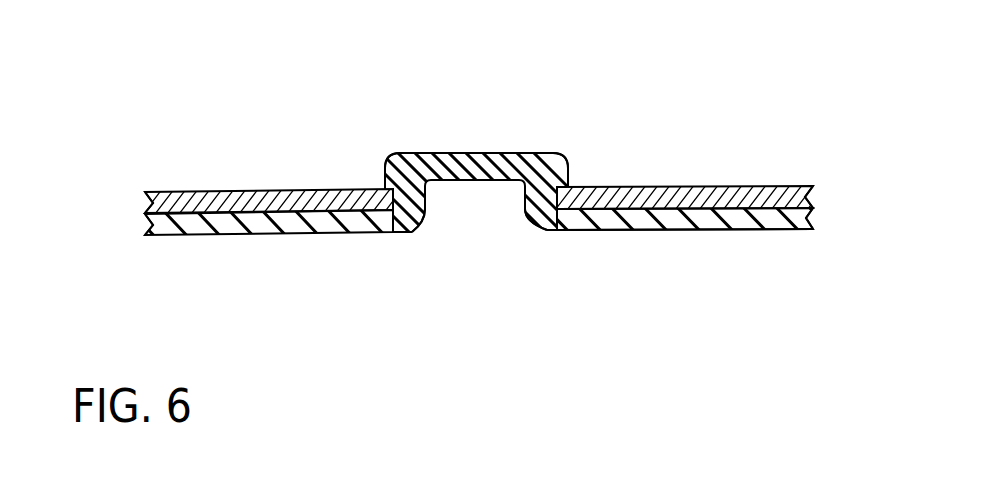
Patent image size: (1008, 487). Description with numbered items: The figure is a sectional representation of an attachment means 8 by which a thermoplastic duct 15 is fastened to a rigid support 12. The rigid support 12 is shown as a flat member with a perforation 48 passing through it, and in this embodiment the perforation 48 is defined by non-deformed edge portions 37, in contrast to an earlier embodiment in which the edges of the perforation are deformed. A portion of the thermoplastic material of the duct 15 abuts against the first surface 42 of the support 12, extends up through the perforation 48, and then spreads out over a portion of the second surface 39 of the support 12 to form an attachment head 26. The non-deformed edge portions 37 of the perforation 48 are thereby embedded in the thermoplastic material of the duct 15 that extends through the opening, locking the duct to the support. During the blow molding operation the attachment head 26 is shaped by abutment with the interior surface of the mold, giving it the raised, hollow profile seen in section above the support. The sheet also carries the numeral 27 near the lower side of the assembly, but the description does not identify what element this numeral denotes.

The attachment means 8 is at (648, 96).
The rigid support 12 is at (285, 193).
The duct 15 is at (300, 236).
The attachment head 26 is at (505, 153).
The lower side 27 is at (672, 377).
The non-deformed edge portions 37 is at (412, 225).
The second surface 39 is at (170, 192).
The first surface 42 is at (192, 235).
The perforation 48 is at (473, 225).